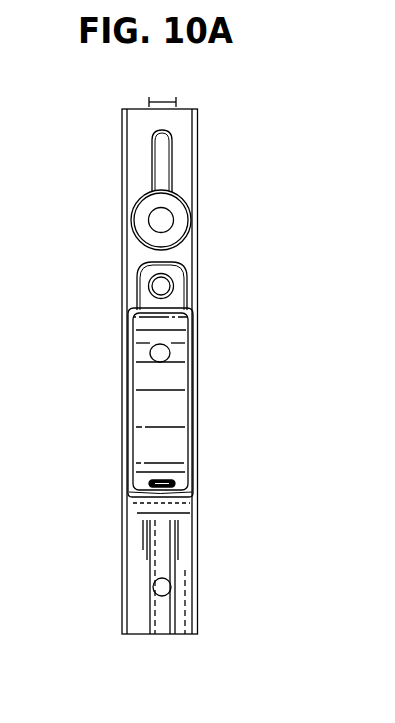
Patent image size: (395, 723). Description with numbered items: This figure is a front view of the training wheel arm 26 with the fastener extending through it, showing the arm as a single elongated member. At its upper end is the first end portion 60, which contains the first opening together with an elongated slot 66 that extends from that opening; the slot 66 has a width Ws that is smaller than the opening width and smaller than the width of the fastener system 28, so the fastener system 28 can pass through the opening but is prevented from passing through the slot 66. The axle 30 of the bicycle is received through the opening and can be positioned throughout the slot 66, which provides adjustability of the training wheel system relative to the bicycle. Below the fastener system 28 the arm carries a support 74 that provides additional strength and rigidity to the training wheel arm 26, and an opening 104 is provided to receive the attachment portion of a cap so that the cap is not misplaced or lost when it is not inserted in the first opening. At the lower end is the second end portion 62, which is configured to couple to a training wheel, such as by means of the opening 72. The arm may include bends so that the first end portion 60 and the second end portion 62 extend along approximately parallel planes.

The first end portion 60 is at (200, 130).
The slot width Ws is at (163, 100).
The elongated slot 66 is at (157, 158).
The fastener system 28 is at (140, 220).
The axle 30 is at (168, 217).
The training wheel arm 26 is at (122, 289).
The support 74 is at (167, 408).
The opening 104 is at (167, 352).
The second end portion 62 is at (200, 583).
The opening 72 is at (158, 594).